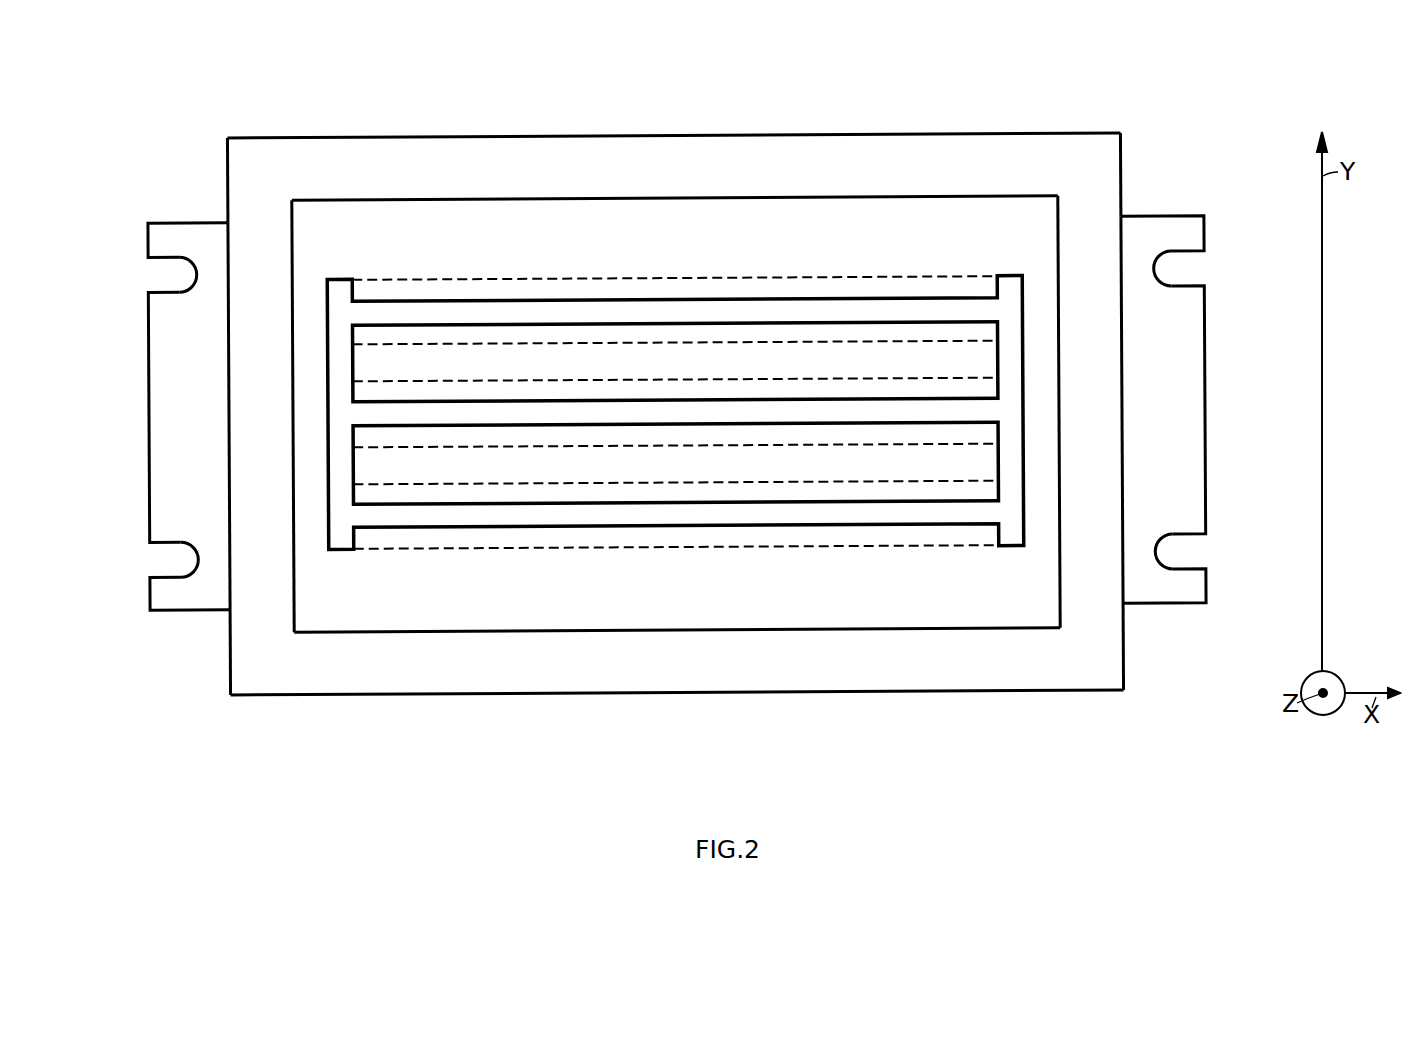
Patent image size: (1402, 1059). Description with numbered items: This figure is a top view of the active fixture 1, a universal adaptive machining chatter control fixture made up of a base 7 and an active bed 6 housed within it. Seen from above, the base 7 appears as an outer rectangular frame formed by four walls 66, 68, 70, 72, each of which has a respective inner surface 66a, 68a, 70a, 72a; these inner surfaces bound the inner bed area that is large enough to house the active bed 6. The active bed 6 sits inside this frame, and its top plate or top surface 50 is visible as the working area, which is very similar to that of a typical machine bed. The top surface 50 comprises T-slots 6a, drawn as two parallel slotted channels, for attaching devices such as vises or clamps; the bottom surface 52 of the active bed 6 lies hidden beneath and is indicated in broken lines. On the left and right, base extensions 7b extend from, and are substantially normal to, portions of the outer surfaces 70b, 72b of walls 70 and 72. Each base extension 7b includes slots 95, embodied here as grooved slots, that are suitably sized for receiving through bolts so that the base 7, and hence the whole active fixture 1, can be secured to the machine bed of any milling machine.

The active fixture 1 is at (685, 382).
The active bed 6 is at (1035, 608).
The T-slots 6a is at (465, 515).
The base 7 is at (685, 417).
The base extensions 7b is at (172, 600).
The top surface 50 is at (352, 600).
The bottom surface 52 is at (500, 258).
The wall 66 is at (880, 670).
The inner surface 66a is at (678, 628).
The wall 68 is at (805, 163).
The inner surface 68a is at (720, 198).
The wall 70 is at (248, 342).
The inner surface 70a is at (294, 228).
The outer surface 70b is at (229, 173).
The wall 72 is at (1097, 178).
The inner surface 72a is at (1057, 218).
The outer surface 72b is at (1122, 236).
The slots 95 is at (168, 577).